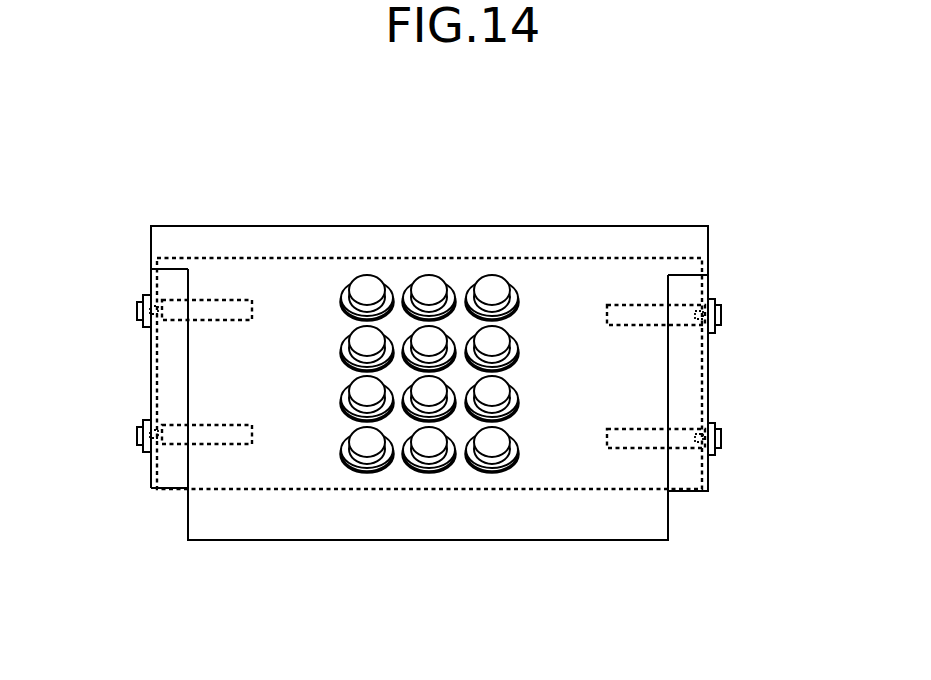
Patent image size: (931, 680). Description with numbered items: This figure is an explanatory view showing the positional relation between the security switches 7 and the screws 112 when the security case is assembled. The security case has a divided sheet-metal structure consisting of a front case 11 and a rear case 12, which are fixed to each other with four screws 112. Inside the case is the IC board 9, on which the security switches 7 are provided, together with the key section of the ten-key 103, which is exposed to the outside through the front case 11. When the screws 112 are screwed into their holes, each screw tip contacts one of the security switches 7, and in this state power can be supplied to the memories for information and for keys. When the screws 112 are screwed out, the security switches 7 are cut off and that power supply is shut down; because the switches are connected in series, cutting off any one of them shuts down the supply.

The security switch 7 is at (215, 300).
The IC board 9 is at (513, 258).
The front case 11 is at (472, 356).
The rear case 12 is at (657, 245).
The ten-key 103 is at (373, 290).
The screw 112 is at (137, 310).